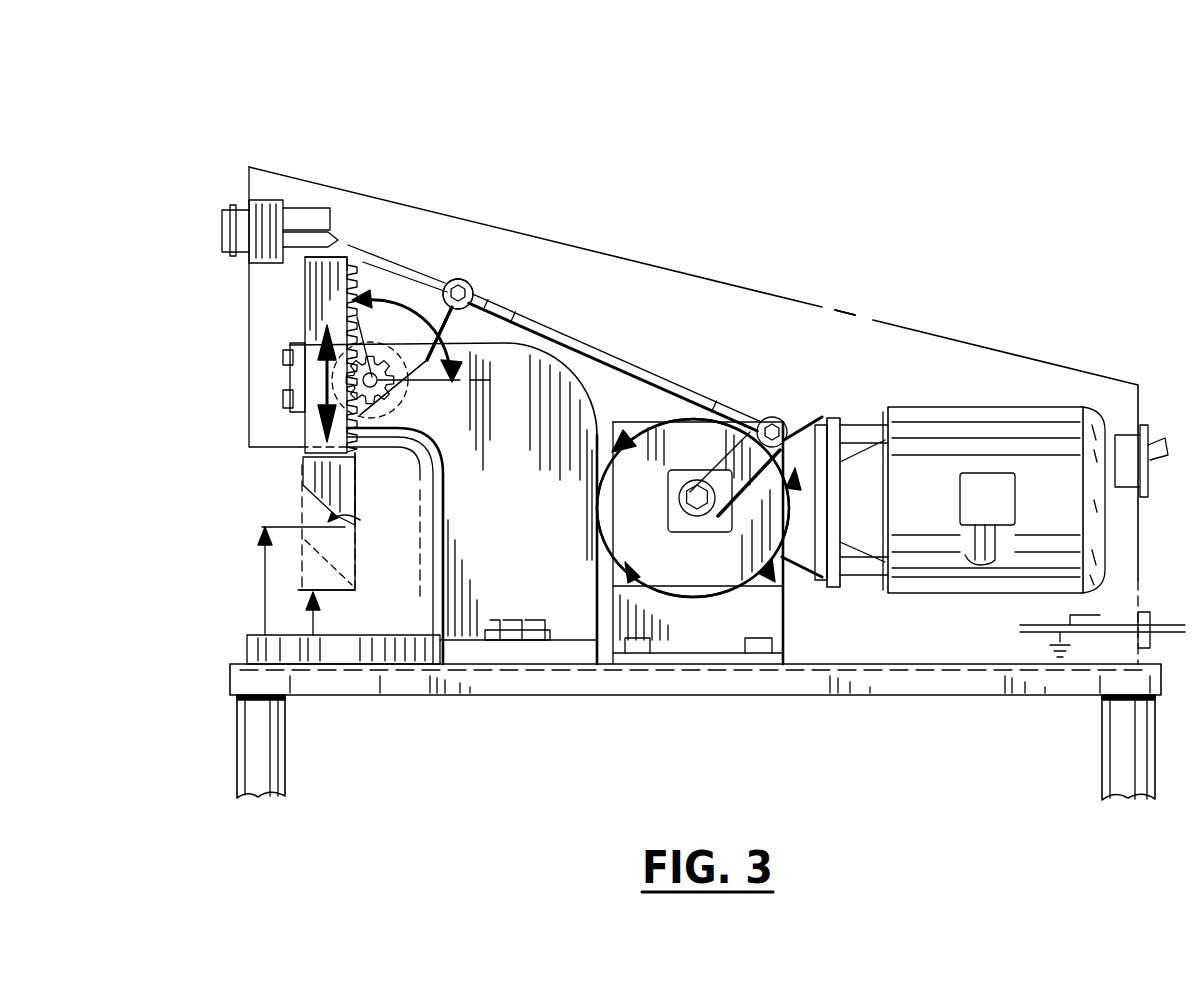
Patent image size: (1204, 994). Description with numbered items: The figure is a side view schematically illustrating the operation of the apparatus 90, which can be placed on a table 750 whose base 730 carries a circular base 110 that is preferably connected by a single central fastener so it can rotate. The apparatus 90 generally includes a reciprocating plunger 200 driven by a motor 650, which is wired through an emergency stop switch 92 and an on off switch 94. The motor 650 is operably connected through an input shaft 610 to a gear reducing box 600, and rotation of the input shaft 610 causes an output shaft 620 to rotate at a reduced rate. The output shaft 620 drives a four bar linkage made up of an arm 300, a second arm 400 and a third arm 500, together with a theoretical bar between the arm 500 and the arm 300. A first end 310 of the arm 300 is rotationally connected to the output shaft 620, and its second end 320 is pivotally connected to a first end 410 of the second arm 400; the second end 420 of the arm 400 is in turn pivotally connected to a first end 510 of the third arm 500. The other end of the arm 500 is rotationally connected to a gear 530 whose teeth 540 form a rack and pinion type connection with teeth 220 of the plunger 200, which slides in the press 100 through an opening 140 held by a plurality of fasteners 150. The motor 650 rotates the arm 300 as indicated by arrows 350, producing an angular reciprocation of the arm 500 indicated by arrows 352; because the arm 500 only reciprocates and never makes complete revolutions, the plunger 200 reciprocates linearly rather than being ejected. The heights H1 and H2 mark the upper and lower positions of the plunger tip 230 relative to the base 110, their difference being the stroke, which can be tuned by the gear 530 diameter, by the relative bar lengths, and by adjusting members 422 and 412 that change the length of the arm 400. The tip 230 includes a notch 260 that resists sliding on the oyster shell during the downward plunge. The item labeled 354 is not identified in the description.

The apparatus 90 is at (938, 105).
The emergency stop switch 92 is at (226, 218).
The on off switch 94 is at (1160, 458).
The press 100 is at (548, 600).
The base 110 is at (378, 653).
The opening 140 is at (293, 332).
The plurality of fasteners 150 is at (285, 402).
The reciprocating plunger 200 is at (317, 280).
The teeth 220 is at (370, 258).
The plunger tip 230 is at (327, 468).
The notch 260 is at (355, 505).
The arm 300 is at (687, 470).
The first end 310 is at (655, 470).
The second end 320 is at (863, 278).
The arrows 350 is at (733, 588).
The arrows 352 is at (394, 297).
The pinion gear 354 is at (292, 404).
The second arm 400 is at (588, 350).
The first end 410 is at (845, 312).
The adjusting member 412 is at (770, 420).
The second end 420 is at (462, 290).
The adjusting member 422 is at (472, 297).
The third arm 500 is at (455, 282).
The first end 510 is at (439, 333).
The gear 530 is at (413, 397).
The teeth 540 is at (393, 387).
The gear reducing box 600 is at (720, 573).
The input shaft 610 is at (850, 425).
The output shaft 620 is at (693, 508).
The motor 650 is at (1010, 440).
The base 730 is at (893, 690).
The table 750 is at (1135, 748).
The upper height H1 is at (262, 598).
The lower height H2 is at (313, 618).